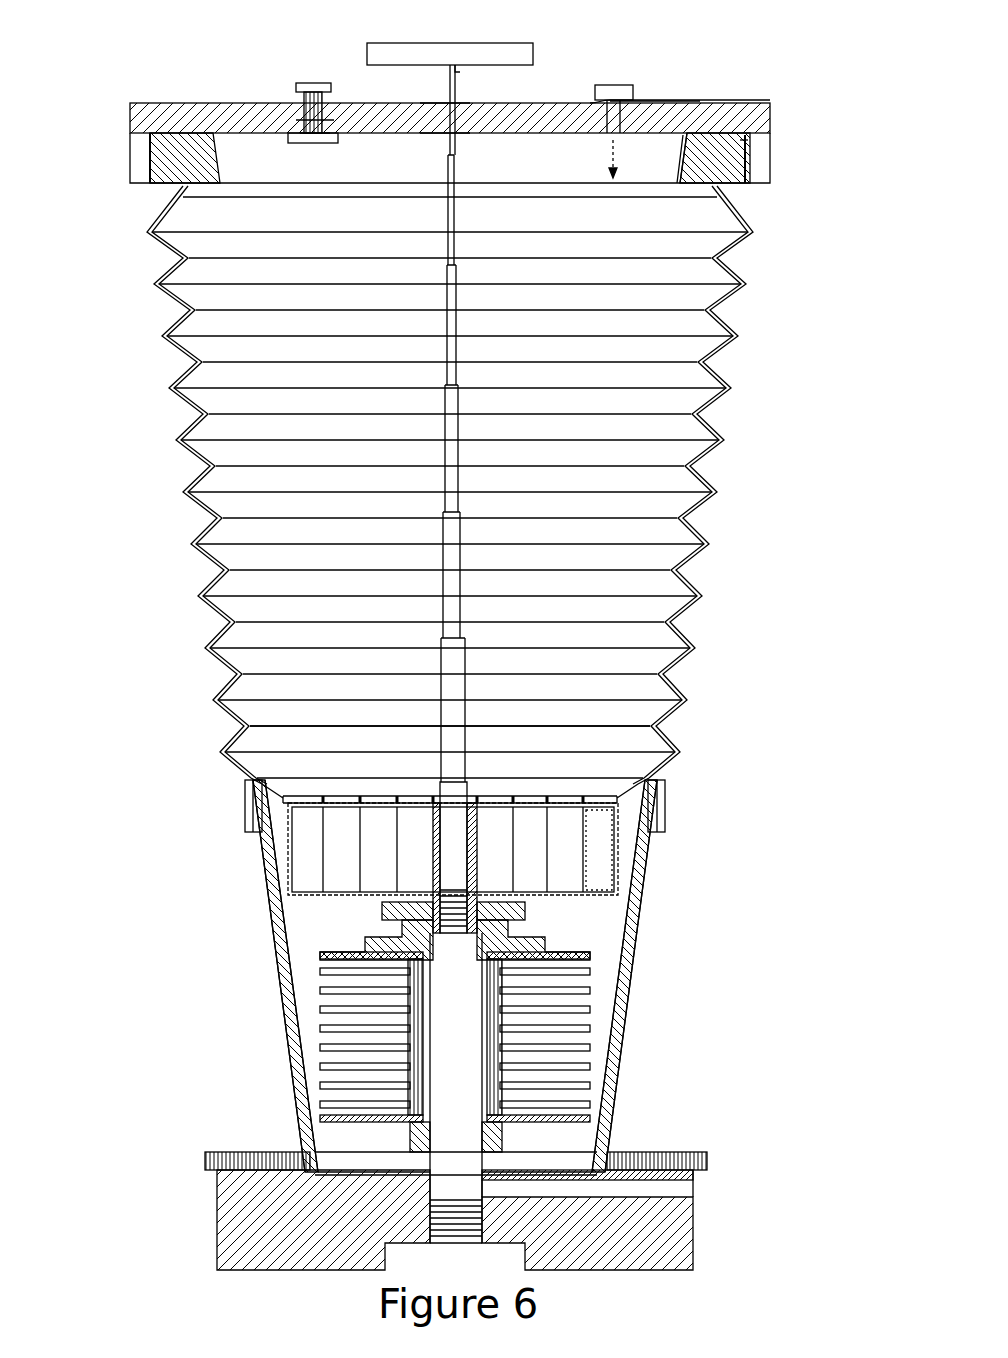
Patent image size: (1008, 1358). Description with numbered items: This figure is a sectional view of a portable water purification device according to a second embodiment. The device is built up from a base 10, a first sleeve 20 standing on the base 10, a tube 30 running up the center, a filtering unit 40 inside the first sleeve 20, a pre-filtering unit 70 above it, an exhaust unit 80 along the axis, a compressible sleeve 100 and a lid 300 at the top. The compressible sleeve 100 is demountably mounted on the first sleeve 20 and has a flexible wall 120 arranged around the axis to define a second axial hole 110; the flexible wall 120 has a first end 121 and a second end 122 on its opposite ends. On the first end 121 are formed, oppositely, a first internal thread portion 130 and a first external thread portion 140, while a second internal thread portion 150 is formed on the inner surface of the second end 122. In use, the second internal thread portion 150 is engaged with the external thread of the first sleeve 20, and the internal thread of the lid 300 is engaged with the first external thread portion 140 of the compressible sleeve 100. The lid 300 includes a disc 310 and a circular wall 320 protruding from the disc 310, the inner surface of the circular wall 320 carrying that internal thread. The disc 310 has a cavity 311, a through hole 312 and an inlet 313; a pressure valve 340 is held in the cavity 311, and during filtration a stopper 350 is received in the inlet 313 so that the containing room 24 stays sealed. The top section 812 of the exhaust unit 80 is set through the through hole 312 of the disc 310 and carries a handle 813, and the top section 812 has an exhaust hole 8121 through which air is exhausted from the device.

The base 10 is at (705, 1222).
The first sleeve 20 is at (625, 1018).
The containing room 24 is at (352, 606).
The tube 30 is at (460, 1037).
The filtering unit 40 is at (318, 993).
The pre-filtering unit 70 is at (615, 852).
The exhaust unit 80 is at (463, 660).
The compressible sleeve 100 is at (509, 485).
The second axial hole 110 is at (640, 420).
The flexible wall 120 is at (735, 362).
The first end 121 is at (718, 150).
The second end 122 is at (665, 795).
The first internal thread portion 130 is at (722, 150).
The first external thread portion 140 is at (760, 155).
The second internal thread portion 150 is at (660, 803).
The lid 300 is at (660, 98).
The disc 310 is at (190, 128).
The cavity 311 is at (350, 130).
The through hole 312 is at (445, 120).
The inlet 313 is at (645, 112).
The circular wall 320 is at (140, 150).
The pressure valve 340 is at (305, 85).
The stopper 350 is at (605, 85).
The top section 812 is at (457, 88).
The handle 813 is at (508, 60).
The exhaust hole 8121 is at (457, 66).